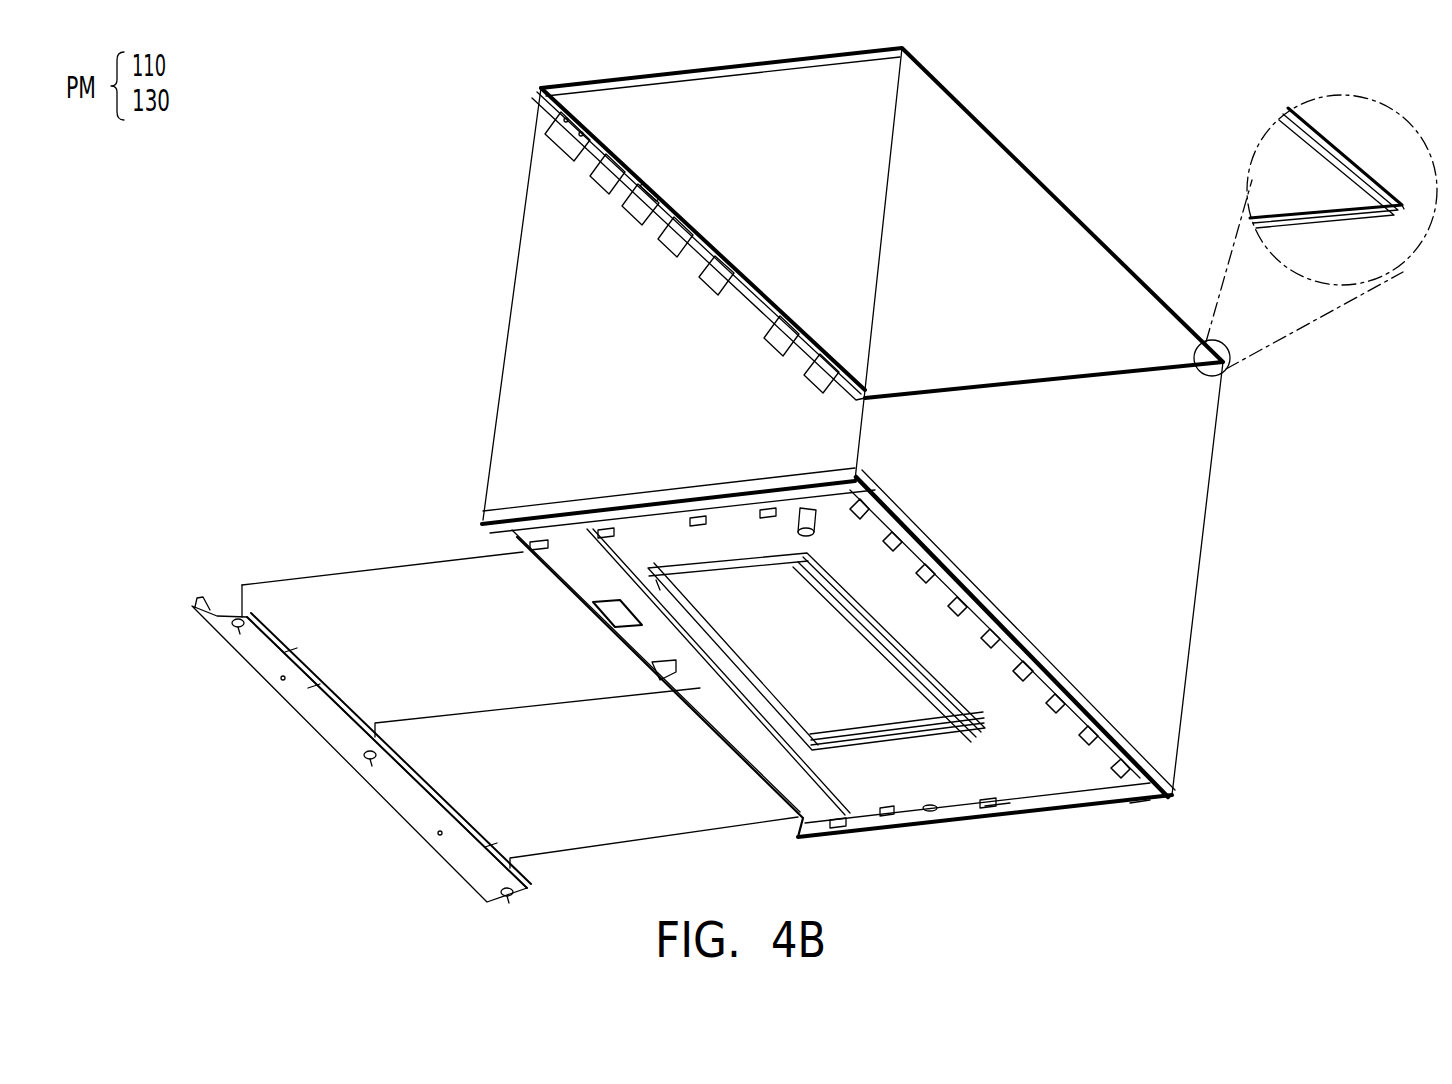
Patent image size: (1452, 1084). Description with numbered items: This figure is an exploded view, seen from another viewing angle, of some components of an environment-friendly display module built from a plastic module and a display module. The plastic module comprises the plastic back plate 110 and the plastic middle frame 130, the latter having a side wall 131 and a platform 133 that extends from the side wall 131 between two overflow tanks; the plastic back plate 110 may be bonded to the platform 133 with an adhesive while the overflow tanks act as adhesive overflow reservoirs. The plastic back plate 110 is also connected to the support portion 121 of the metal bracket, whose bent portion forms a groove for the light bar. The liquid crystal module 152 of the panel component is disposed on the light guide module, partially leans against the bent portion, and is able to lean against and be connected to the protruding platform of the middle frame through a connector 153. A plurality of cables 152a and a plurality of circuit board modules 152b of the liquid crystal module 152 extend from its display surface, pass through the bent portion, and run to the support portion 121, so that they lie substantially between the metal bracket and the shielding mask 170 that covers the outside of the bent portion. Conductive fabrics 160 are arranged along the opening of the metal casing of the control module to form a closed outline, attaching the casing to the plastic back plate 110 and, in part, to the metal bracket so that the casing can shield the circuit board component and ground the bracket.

The plastic back plate 110 is at (832, 680).
The support portion 121 is at (800, 750).
The plastic middle frame 130 is at (959, 484).
The side wall 131 is at (1143, 803).
The platform 133 is at (1013, 802).
The liquid crystal module 152 is at (1281, 162).
The cables 152a is at (573, 136).
The circuit board modules 152b is at (698, 228).
The connector 153 is at (1361, 182).
The conductive fabrics 160 is at (900, 640).
The shielding mask 170 is at (420, 813).